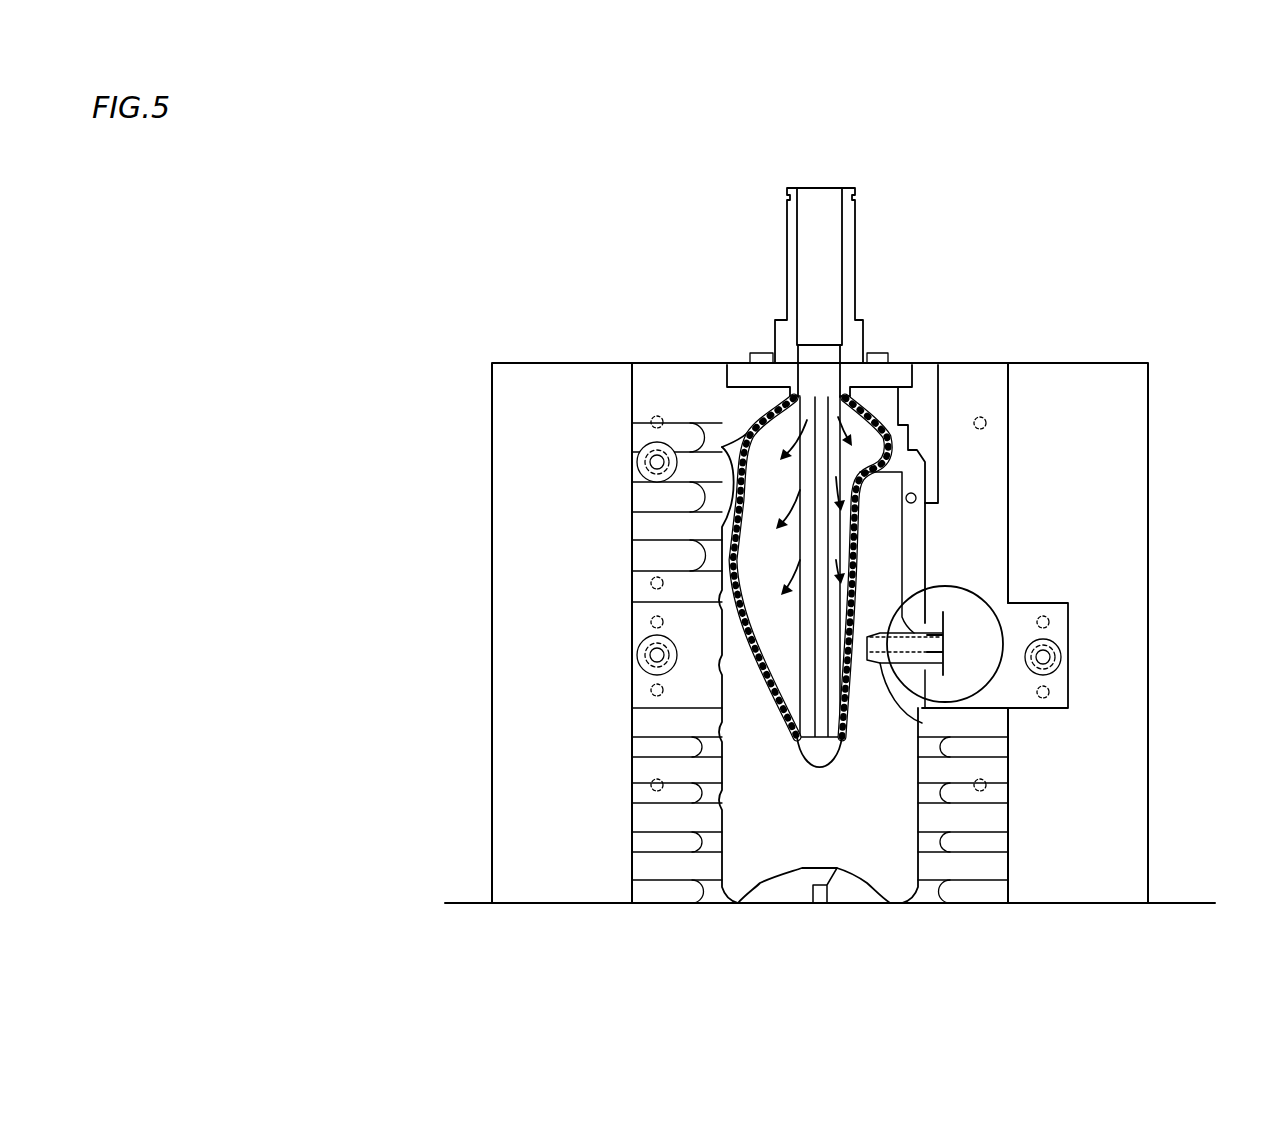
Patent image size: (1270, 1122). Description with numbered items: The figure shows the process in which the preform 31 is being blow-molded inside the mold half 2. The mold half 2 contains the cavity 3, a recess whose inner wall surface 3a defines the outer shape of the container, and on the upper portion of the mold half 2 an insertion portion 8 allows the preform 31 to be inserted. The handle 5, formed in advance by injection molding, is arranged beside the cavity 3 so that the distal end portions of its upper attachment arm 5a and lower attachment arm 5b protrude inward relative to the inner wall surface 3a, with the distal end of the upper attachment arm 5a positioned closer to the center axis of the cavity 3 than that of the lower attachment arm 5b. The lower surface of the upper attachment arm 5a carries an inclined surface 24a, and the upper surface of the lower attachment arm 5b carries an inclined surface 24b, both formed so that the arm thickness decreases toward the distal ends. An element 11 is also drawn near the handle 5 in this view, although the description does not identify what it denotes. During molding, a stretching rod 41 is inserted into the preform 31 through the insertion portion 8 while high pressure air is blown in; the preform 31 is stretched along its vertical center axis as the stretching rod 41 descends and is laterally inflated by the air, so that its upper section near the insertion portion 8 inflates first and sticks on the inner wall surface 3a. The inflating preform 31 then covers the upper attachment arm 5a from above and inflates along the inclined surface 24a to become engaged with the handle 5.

The mold half 2 is at (1075, 861).
The cavity 3 is at (887, 823).
The inner wall surface 3a is at (722, 490).
The handle 5 is at (880, 497).
The upper attachment arm 5a is at (865, 483).
The lower attachment arm 5b is at (922, 723).
The insertion portion 8 is at (830, 275).
The liquid supply nozzle 11 is at (945, 618).
The inclined surface 24a is at (838, 501).
The inclined surface 24b is at (867, 622).
The preform 31 is at (722, 532).
The stretching rod 41 is at (817, 615).